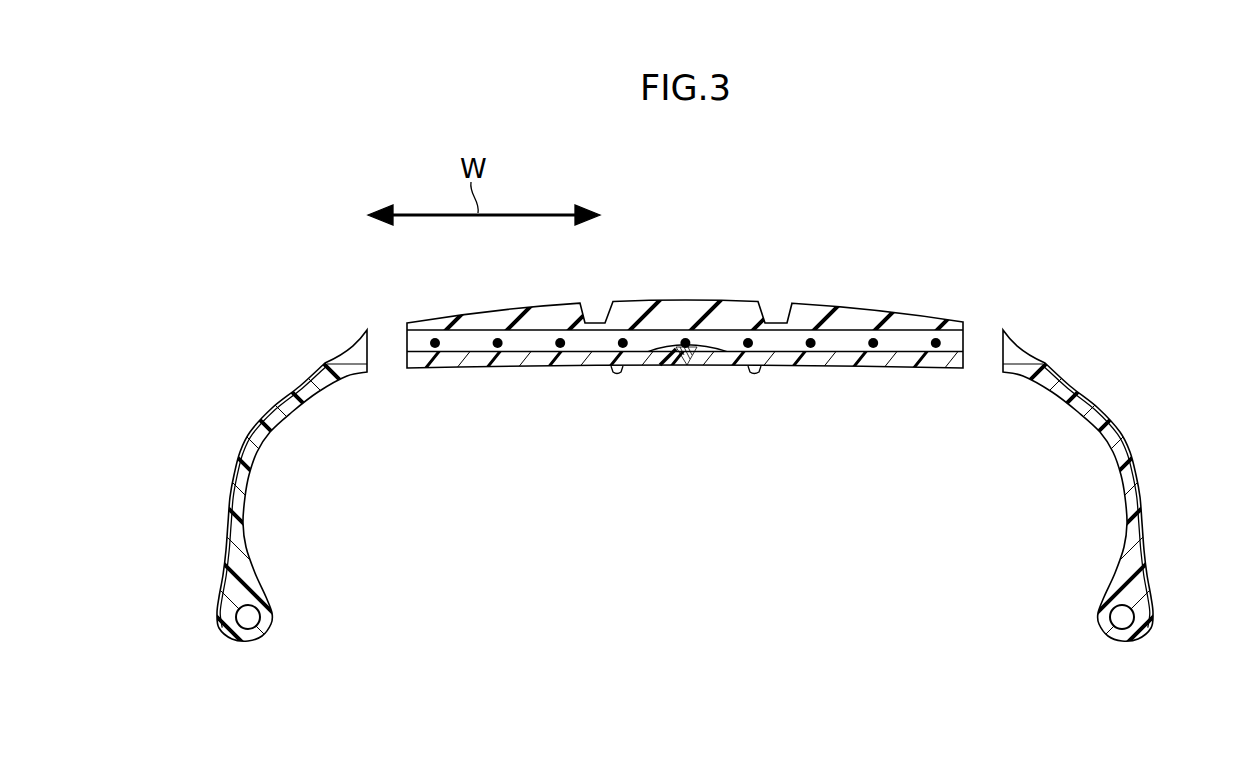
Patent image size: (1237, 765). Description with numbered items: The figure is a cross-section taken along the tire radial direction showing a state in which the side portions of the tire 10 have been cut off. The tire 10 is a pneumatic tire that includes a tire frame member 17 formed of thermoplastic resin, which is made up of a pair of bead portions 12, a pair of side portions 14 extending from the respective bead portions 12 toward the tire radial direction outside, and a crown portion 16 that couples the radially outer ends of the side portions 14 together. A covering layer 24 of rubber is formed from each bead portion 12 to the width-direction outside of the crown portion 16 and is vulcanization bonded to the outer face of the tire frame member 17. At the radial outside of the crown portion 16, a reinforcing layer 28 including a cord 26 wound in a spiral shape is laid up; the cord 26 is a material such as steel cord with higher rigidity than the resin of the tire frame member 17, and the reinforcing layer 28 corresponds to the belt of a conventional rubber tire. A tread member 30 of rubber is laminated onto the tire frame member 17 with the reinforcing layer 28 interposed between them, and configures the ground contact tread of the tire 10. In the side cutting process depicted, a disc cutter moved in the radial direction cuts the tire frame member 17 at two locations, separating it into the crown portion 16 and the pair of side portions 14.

The tire 10 is at (1128, 307).
The bead portion 12 is at (233, 611).
The side portion 14 is at (237, 475).
The crown portion 16 is at (776, 366).
The tire frame member 17 is at (507, 378).
The covering layer 24 is at (229, 519).
The cord 26 is at (936, 342).
The reinforcing layer 28 is at (966, 340).
The tread member 30 is at (531, 305).